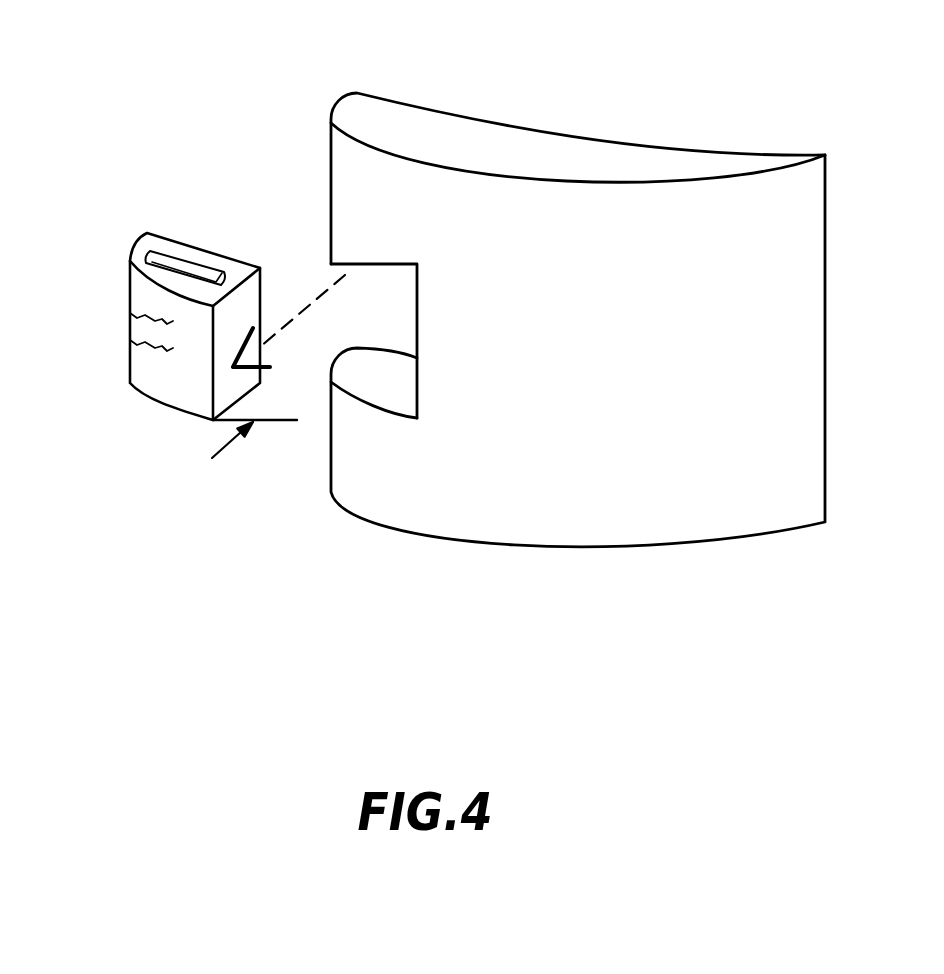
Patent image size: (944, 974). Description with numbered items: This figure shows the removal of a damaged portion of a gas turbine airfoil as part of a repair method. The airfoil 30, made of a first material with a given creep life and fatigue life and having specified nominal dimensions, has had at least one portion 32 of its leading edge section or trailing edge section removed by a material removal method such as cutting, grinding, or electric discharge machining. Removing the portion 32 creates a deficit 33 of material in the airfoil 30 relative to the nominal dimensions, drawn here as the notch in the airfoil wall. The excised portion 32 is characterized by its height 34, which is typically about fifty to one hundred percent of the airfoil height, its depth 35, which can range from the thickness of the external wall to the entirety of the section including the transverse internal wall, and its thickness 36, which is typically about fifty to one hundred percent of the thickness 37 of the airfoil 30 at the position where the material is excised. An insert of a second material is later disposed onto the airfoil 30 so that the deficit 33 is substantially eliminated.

The airfoil 30 is at (742, 472).
The portion 32 is at (225, 188).
The deficit 33 is at (414, 346).
The height 34 is at (118, 262).
The depth 35 is at (125, 388).
The thickness 36 is at (350, 332).
The thickness 37 is at (367, 202).